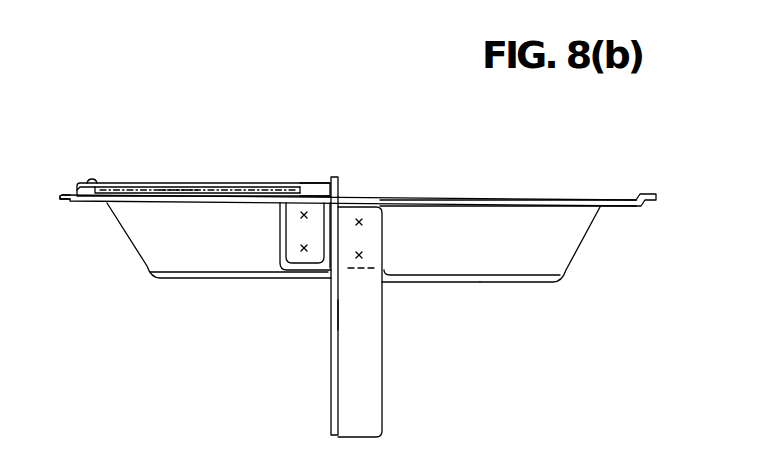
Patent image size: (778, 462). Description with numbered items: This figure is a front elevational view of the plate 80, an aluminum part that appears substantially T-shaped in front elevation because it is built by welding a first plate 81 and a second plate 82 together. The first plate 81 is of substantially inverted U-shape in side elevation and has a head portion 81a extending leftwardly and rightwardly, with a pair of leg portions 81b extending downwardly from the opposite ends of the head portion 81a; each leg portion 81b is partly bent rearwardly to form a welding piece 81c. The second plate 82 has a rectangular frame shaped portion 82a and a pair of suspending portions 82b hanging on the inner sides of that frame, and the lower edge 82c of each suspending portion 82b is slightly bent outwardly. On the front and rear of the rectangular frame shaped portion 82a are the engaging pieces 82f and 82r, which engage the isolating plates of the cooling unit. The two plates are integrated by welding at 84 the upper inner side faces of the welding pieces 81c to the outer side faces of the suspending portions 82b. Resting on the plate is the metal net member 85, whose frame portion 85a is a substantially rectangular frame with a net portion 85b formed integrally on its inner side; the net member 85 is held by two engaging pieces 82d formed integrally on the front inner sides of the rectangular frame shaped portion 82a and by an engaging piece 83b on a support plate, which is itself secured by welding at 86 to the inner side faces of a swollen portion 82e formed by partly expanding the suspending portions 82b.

The plate 80 is at (527, 187).
The first plate 81 is at (327, 328).
The head portion 81a is at (340, 183).
The leg portion 81b is at (330, 368).
The welding piece 81c is at (372, 377).
The second plate 82 is at (442, 197).
The rectangular frame shaped portion 82a is at (167, 206).
The suspending portion 82b is at (567, 247).
The lower edge 82c is at (495, 283).
The engaging piece 82d is at (93, 180).
The swollen portion 82e is at (278, 263).
The engaging piece 82f is at (63, 183).
The engaging piece 82r is at (653, 194).
The engaging piece 83b is at (305, 185).
The welding location 84 is at (362, 255).
The net member 85 is at (255, 181).
The frame portion 85a is at (80, 183).
The net portion 85b is at (168, 188).
The welding location 86 is at (300, 248).